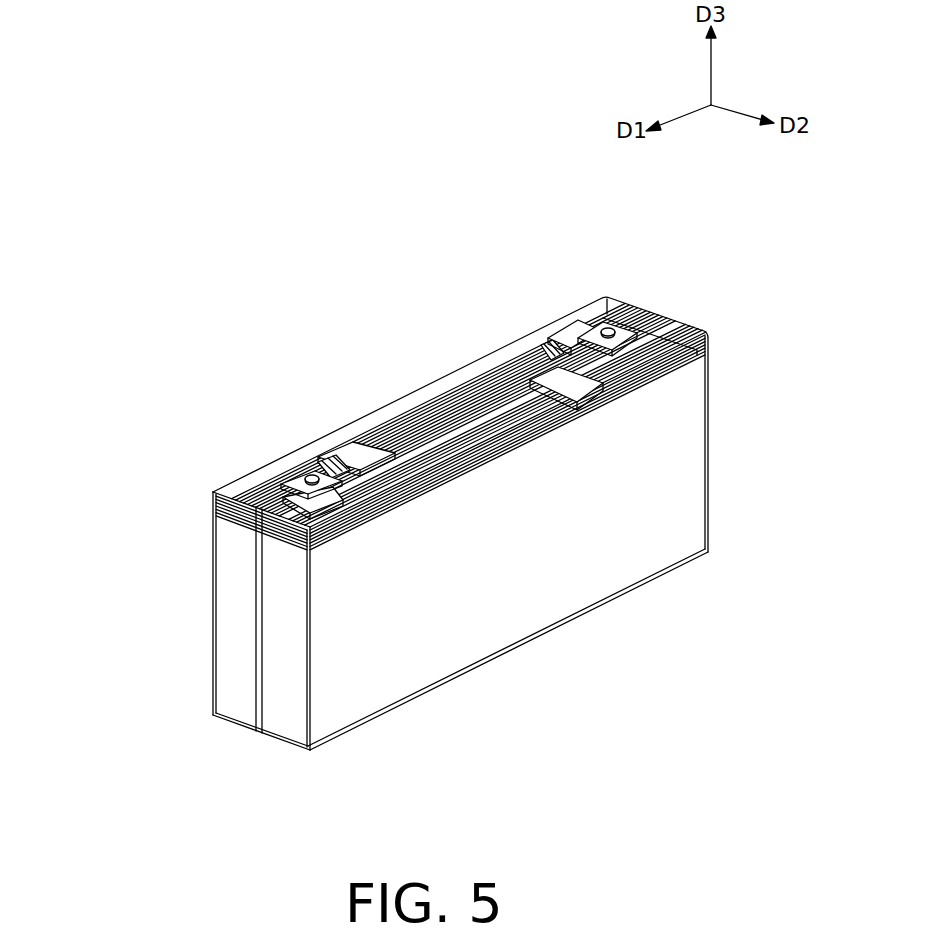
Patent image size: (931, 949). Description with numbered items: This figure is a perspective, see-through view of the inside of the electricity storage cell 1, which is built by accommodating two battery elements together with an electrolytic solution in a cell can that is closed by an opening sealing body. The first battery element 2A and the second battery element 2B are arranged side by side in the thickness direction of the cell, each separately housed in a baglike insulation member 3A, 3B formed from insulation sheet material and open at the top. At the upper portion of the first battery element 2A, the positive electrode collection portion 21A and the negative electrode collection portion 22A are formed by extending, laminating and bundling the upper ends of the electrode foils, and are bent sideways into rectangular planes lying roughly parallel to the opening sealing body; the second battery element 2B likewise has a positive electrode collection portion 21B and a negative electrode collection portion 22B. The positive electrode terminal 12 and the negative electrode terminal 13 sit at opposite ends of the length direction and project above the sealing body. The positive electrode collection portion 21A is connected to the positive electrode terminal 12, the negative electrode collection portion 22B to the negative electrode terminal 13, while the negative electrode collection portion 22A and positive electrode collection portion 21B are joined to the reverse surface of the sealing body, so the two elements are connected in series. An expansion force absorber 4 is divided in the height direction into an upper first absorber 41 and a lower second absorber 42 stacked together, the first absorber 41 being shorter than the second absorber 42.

The electricity storage cell 1 is at (307, 200).
The first battery element 2A is at (297, 680).
The second battery element 2B is at (226, 638).
The insulation member 3A is at (285, 725).
The insulation member 3B is at (230, 680).
The expansion force absorber 4 is at (98, 545).
The first absorber 41 is at (262, 548).
The second absorber 42 is at (265, 594).
The positive electrode terminal 12 is at (300, 480).
The negative electrode terminal 13 is at (617, 320).
The positive electrode collection portion 21A is at (338, 488).
The positive electrode collection portion 21B is at (350, 445).
The negative electrode collection portion 22A is at (537, 350).
The negative electrode collection portion 22B is at (575, 328).